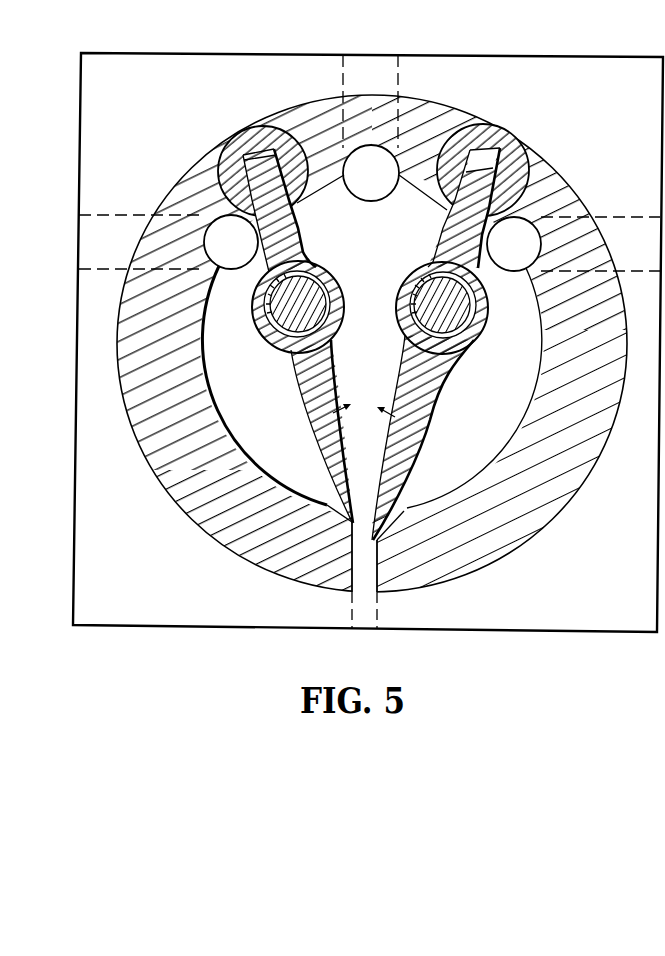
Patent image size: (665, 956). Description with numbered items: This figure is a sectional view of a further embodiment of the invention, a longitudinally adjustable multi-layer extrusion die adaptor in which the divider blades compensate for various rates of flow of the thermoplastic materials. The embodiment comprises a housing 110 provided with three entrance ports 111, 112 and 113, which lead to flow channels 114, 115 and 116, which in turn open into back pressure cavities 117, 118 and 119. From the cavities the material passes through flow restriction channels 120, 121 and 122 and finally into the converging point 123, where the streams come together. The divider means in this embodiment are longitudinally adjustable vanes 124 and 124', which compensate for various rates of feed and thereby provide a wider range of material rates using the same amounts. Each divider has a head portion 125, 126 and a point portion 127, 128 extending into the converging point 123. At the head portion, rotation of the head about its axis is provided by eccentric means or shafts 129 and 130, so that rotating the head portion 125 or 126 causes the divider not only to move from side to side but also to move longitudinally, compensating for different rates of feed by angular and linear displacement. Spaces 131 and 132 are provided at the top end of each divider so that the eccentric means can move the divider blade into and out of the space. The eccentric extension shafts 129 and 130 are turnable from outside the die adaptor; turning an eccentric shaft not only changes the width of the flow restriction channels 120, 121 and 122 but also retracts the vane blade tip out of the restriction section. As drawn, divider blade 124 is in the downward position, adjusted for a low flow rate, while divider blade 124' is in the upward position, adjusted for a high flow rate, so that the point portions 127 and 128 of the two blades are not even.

The housing 110 is at (586, 180).
The entrance port 111 is at (118, 215).
The entrance port 112 is at (362, 57).
The entrance port 113 is at (641, 217).
The flow channel 114 is at (247, 252).
The flow channel 115 is at (387, 183).
The flow channel 116 is at (530, 254).
The back pressure cavity 117 is at (264, 393).
The back pressure cavity 118 is at (384, 380).
The back pressure cavity 119 is at (503, 395).
The flow restriction channel 120 is at (343, 520).
The flow restriction channel 121 is at (350, 542).
The flow restriction channel 122 is at (385, 532).
The converging point 123 is at (368, 553).
The longitudinally adjustable vane 124 is at (439, 286).
The longitudinally adjustable vane 124' is at (308, 287).
The head portion 125 is at (330, 346).
The head portion 126 is at (408, 343).
The point portion 127 is at (335, 490).
The point portion 128 is at (392, 500).
The eccentric shaft 129 is at (326, 262).
The eccentric shaft 130 is at (412, 267).
The space 131 is at (245, 135).
The space 132 is at (490, 158).